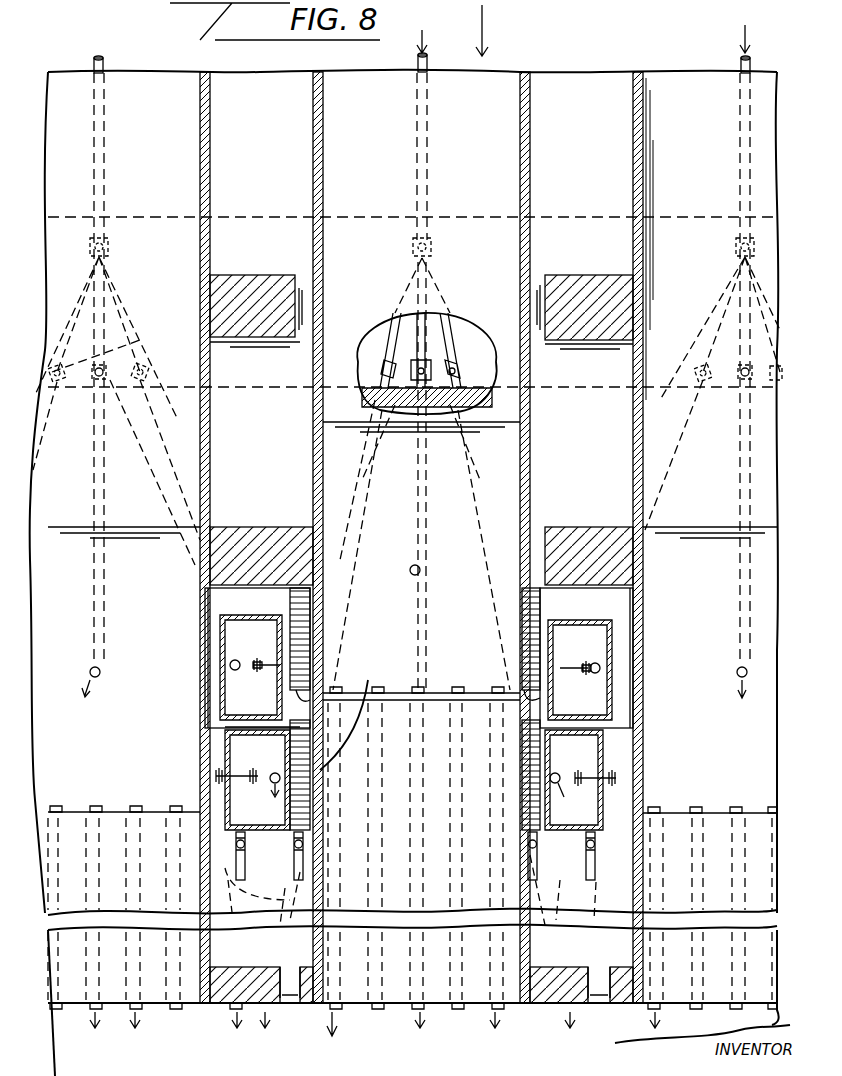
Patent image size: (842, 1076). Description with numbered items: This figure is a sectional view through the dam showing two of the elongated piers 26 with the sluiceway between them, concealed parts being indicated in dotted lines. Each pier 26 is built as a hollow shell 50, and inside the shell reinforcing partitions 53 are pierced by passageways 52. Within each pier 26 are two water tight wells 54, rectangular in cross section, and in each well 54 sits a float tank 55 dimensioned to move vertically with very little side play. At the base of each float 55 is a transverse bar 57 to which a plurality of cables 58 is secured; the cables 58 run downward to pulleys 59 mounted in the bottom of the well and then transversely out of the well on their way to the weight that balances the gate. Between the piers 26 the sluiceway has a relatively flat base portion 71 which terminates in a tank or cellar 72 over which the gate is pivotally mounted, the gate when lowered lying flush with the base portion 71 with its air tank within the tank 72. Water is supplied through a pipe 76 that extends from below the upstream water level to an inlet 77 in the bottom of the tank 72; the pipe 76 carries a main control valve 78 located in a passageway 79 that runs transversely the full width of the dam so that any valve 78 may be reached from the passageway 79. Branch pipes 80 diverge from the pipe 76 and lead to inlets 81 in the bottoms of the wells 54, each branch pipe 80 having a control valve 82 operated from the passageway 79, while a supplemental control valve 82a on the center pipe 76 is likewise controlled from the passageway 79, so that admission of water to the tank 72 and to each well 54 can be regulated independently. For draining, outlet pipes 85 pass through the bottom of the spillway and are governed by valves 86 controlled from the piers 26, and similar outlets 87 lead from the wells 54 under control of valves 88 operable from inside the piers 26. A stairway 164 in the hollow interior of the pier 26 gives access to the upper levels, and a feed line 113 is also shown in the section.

The pier 26 is at (648, 150).
The hollow shell 50 is at (316, 95).
The passageway 52 is at (297, 280).
The reinforcing partition 53 is at (250, 278).
The water tight well 54 is at (285, 612).
The float tank 55 is at (612, 765).
The transverse bar 57 is at (256, 786).
The cable 58 is at (267, 660).
The pulley 59 is at (416, 667).
The base portion 71 is at (490, 82).
The tank 72 is at (528, 478).
The pipe 76 is at (98, 155).
The inlet 77 is at (415, 575).
The main control valve 78 is at (410, 250).
The passageway 79 is at (163, 216).
The branch pipe 80 is at (165, 440).
The inlet 81 is at (231, 666).
The control valve 82 is at (345, 368).
The supplemental control valve 82a is at (421, 358).
The outlet pipe 85 is at (172, 1015).
The valve 86 is at (470, 693).
The outlet 87 is at (228, 870).
The valve 88 is at (235, 842).
The feed pipe 113 is at (349, 721).
The stairway 164 is at (300, 640).